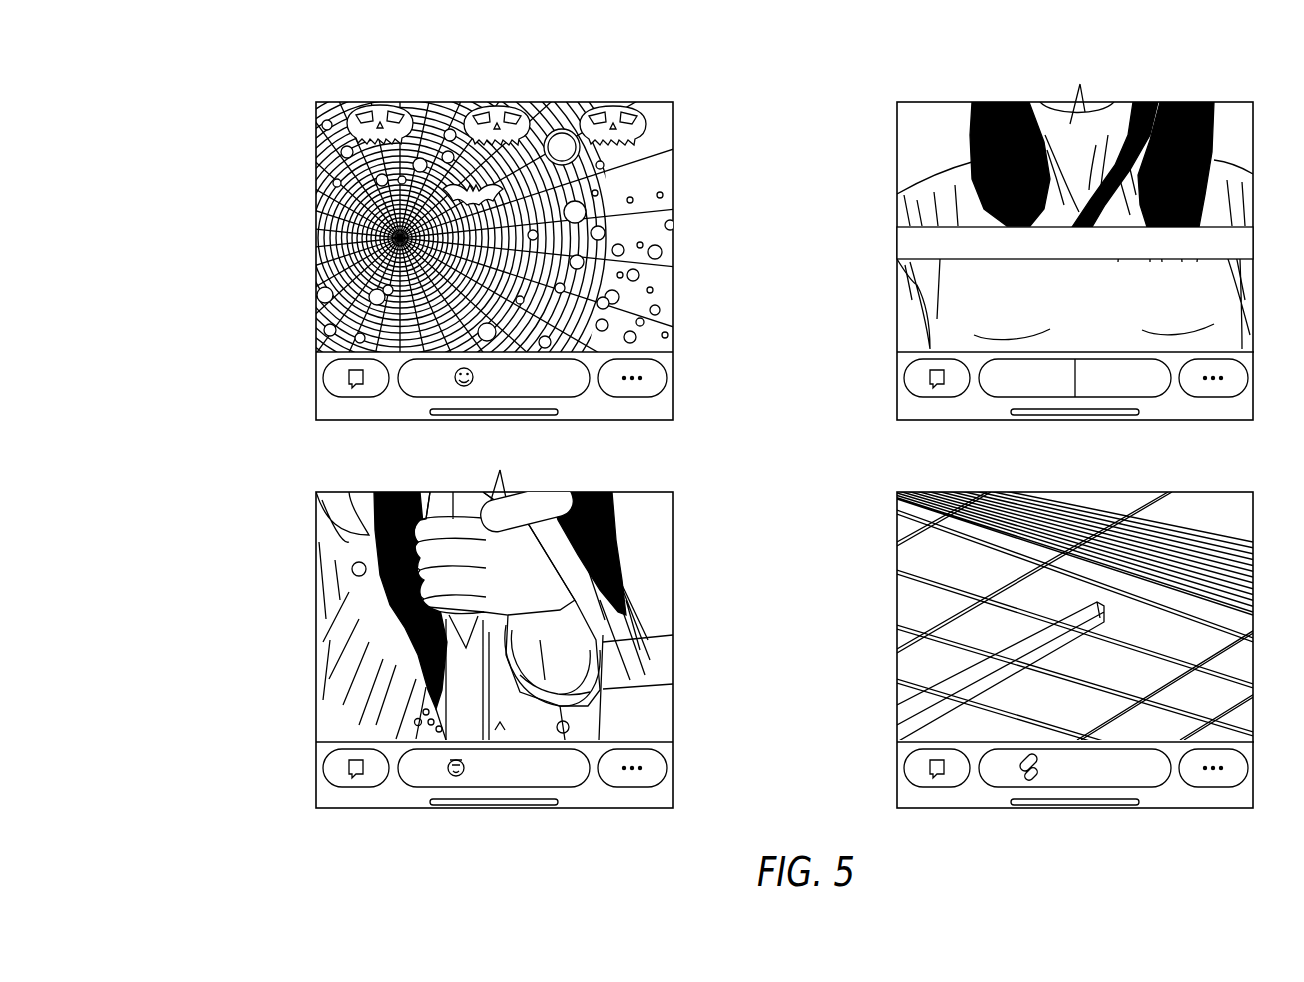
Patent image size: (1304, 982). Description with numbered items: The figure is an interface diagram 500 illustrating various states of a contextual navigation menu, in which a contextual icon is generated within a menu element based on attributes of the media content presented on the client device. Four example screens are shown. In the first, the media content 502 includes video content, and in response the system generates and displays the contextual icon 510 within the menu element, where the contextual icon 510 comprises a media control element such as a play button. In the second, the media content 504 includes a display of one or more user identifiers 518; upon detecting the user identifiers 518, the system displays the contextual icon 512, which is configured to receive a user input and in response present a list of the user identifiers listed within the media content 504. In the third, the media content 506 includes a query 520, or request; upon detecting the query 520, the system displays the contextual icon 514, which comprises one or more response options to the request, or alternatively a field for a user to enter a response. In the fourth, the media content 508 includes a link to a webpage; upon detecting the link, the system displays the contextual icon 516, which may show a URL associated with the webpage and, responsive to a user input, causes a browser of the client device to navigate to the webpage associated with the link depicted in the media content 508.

The interface diagram 500 is at (238, 72).
The media content 502 is at (316, 125).
The media content 504 is at (316, 515).
The media content 506 is at (896, 125).
The media content 508 is at (896, 515).
The contextual icon 510 is at (580, 398).
The contextual icon 512 is at (568, 786).
The contextual icon 514 is at (1158, 398).
The contextual icon 516 is at (1152, 786).
The user identifiers 518 is at (478, 469).
The query 520 is at (896, 243).